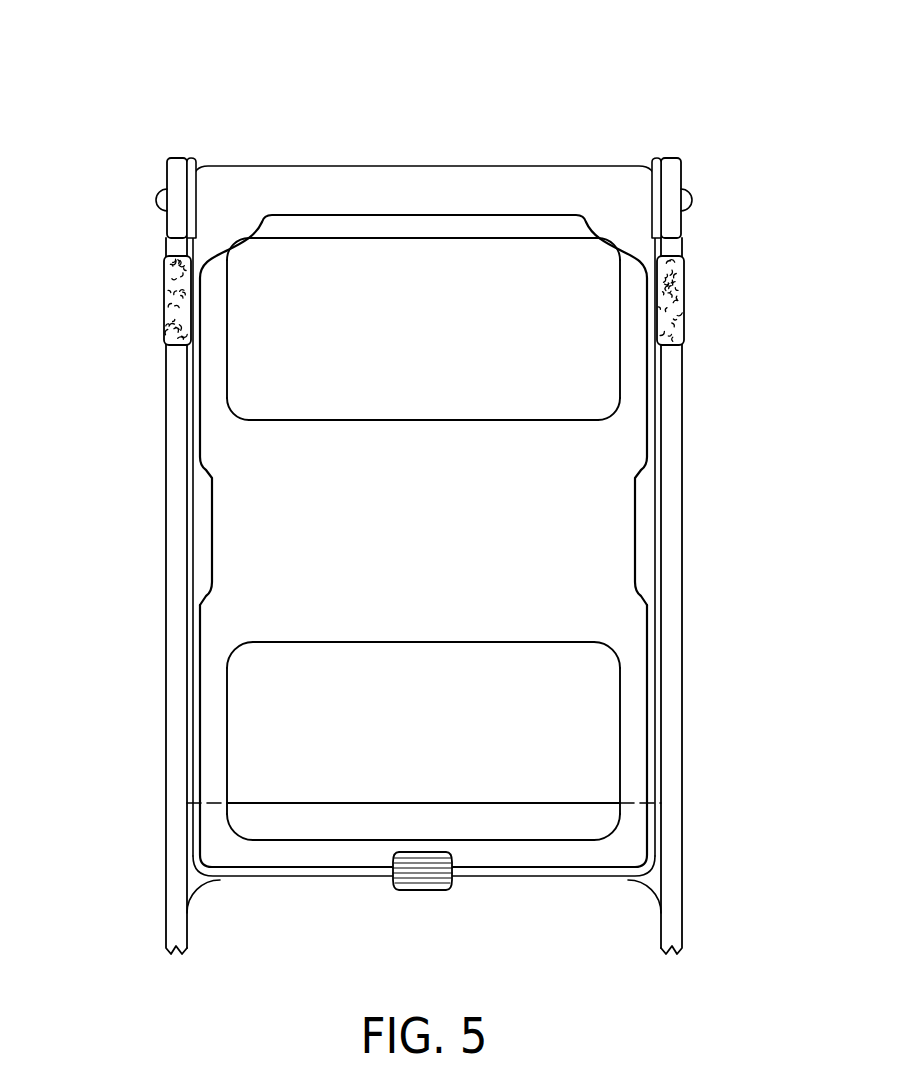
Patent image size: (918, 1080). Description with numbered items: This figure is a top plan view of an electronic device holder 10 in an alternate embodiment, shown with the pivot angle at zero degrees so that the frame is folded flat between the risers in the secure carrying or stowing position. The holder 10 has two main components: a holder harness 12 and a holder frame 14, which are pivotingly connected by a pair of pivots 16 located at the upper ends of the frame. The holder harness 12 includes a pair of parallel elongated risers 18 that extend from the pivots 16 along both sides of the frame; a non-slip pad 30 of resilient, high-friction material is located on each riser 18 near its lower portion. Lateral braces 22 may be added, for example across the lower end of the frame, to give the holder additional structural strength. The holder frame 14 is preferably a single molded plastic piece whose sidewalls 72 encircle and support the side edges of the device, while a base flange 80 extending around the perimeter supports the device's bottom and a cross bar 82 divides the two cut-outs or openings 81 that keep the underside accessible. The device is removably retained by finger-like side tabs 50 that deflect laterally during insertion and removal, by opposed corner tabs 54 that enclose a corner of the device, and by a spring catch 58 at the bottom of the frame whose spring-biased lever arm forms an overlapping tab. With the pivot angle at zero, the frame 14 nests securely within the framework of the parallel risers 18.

The electronic device holder 10 is at (703, 420).
The holder harness 12 is at (144, 840).
The holder frame 14 is at (500, 885).
The pivot 16 is at (176, 185).
The riser 18 is at (176, 596).
The lateral brace 22 is at (354, 818).
The non-slip pad 30 is at (172, 298).
The side tab 50 is at (205, 508).
The corner tab 54 is at (623, 240).
The spring catch 58 is at (421, 875).
The sidewall 72 is at (417, 190).
The base flange 80 is at (220, 371).
The opening 81 is at (318, 275).
The cross bar 82 is at (403, 445).